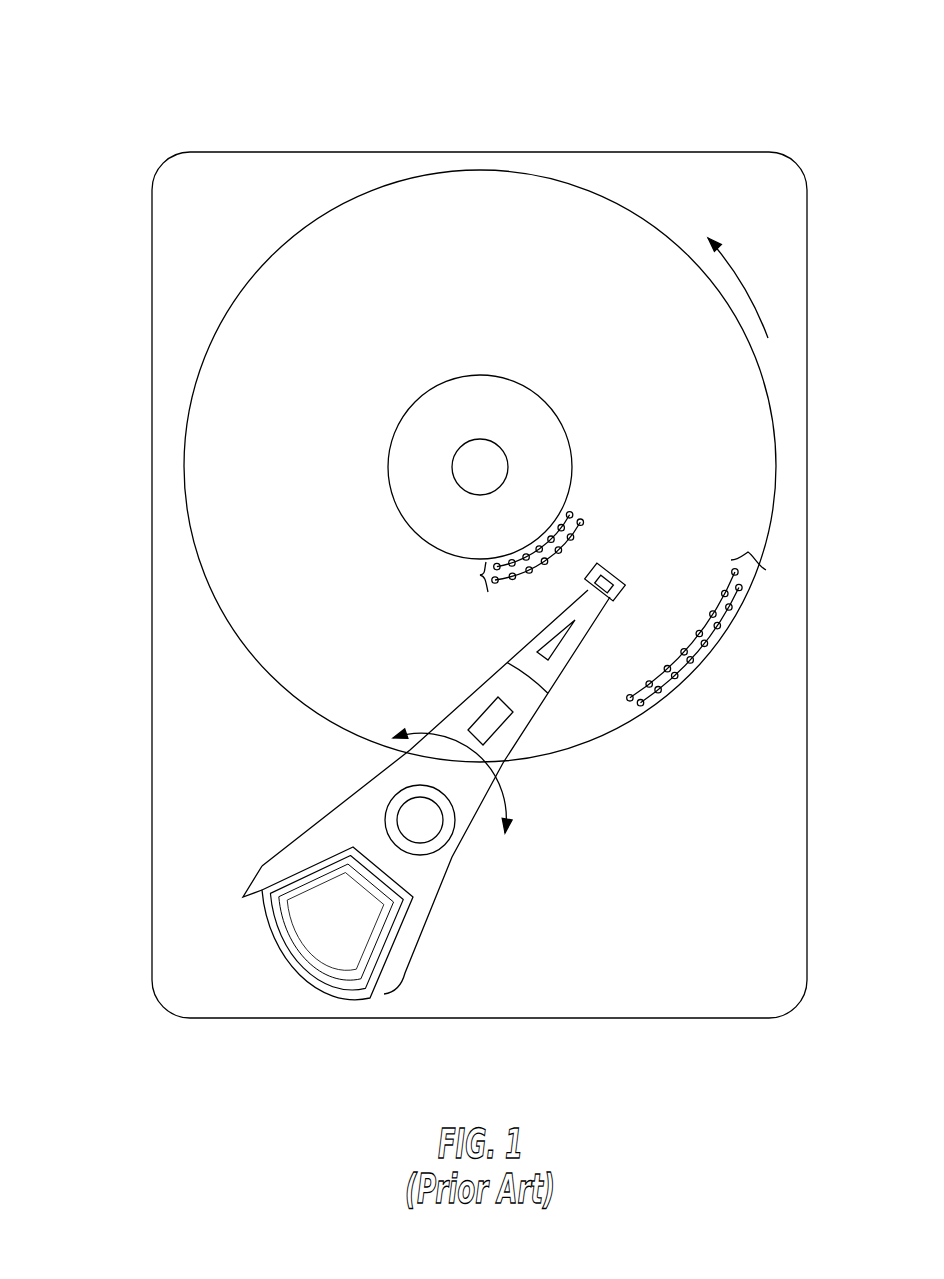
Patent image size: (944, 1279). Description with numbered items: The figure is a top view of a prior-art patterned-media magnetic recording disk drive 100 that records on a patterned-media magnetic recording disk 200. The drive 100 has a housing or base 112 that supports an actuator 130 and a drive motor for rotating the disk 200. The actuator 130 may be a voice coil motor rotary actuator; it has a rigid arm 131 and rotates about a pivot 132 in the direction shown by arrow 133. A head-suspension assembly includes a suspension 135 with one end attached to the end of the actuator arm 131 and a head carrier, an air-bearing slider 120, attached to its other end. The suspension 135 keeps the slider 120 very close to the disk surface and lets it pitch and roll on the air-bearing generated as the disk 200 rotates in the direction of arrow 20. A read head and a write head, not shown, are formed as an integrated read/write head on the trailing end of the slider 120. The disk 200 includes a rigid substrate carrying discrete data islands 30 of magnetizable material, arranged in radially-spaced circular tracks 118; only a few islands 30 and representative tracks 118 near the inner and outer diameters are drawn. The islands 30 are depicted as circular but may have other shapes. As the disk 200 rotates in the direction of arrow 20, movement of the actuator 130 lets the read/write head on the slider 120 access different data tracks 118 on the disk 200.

The patterned-media magnetic recording disk drive 100 is at (157, 68).
The housing or base 112 is at (727, 152).
The patterned-media magnetic recording disk 200 is at (323, 213).
The arrow 20 is at (742, 270).
The data islands 30 is at (498, 595).
The circular tracks 118 is at (480, 575).
The air-bearing slider 120 is at (614, 594).
The actuator 130 is at (250, 880).
The rigid arm 131 is at (465, 715).
The pivot 132 is at (408, 814).
The arrow 133 is at (507, 797).
The suspension 135 is at (527, 655).